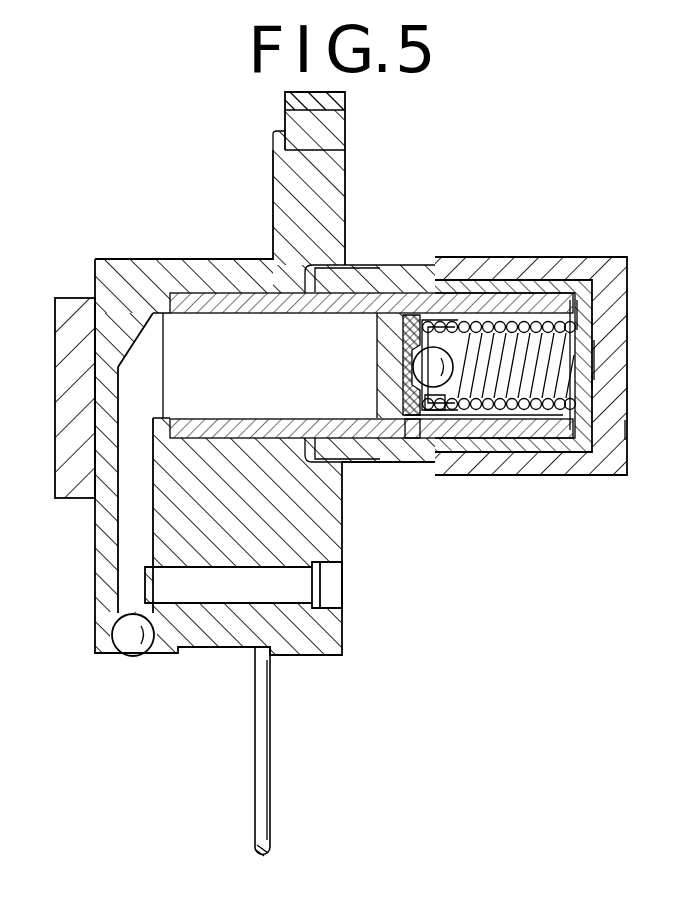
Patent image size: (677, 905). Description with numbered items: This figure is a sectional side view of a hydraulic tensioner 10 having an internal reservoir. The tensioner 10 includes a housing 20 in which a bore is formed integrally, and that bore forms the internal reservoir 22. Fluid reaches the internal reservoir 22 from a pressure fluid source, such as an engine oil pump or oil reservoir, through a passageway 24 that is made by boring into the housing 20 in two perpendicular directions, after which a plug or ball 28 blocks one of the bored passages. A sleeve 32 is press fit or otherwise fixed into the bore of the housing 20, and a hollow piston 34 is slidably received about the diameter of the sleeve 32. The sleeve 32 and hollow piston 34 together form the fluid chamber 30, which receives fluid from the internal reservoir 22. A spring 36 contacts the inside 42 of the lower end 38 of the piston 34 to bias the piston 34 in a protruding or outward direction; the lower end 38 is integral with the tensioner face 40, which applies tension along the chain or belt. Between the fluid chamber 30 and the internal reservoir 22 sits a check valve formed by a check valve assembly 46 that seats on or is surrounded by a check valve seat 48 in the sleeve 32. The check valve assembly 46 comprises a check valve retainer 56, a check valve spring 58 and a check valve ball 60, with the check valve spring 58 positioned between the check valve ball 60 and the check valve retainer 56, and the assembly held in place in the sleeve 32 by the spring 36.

The hydraulic tensioner 10 is at (0, 462).
The housing 20 is at (342, 522).
The internal reservoir 22 is at (204, 326).
The passageway 24 is at (332, 588).
The ball 28 is at (125, 657).
The fluid chamber 30 is at (497, 410).
The sleeve 32 is at (560, 280).
The hollow piston 34 is at (598, 365).
The spring 36 is at (539, 421).
The lower end 38 is at (598, 385).
The tensioner face 40 is at (630, 432).
The inside 42 is at (581, 324).
The check valve assembly 46 is at (462, 333).
The check valve seat 48 is at (410, 316).
The check valve retainer 56 is at (417, 434).
The check valve spring 58 is at (447, 392).
The check valve ball 60 is at (437, 357).